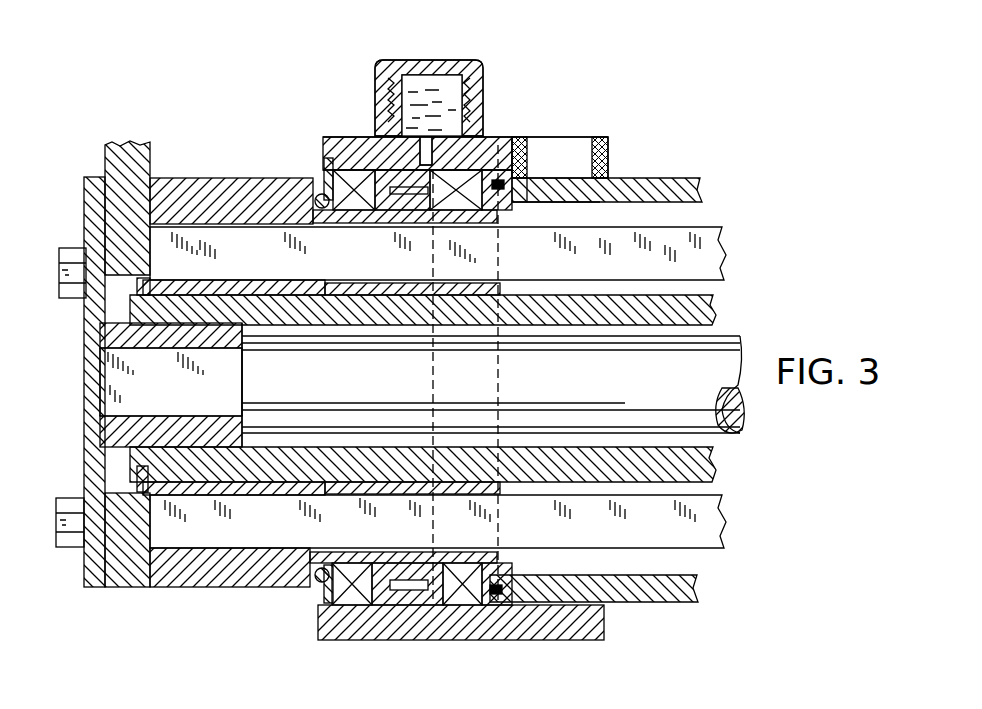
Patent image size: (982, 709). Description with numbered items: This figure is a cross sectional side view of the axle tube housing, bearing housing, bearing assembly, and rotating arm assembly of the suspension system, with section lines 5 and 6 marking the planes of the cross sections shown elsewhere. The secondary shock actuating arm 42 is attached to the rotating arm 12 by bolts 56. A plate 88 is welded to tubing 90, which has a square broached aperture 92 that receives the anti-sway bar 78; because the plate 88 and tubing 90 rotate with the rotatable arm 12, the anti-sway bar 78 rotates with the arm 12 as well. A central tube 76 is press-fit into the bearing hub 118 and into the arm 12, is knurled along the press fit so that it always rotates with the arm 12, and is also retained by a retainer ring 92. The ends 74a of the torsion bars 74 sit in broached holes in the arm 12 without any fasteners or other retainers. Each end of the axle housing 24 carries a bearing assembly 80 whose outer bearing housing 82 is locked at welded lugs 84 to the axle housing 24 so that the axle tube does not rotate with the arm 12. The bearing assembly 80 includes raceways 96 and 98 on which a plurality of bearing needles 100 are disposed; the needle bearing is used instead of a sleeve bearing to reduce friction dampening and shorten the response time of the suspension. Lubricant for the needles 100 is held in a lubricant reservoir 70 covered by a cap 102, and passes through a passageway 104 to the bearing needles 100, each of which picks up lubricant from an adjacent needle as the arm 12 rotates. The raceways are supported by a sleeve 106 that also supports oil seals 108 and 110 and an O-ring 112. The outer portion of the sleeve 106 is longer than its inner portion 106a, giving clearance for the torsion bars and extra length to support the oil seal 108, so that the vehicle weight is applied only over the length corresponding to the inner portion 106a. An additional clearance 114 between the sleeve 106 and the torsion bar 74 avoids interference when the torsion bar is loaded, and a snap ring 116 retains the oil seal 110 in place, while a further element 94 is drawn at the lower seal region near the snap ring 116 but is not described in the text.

The rotating arm 12 is at (205, 578).
The axle housing 24 is at (685, 594).
The secondary shock actuating arm 42 is at (150, 153).
The bolts 56 is at (70, 252).
The lubricant reservoir 70 is at (435, 85).
The torsion bar 74 is at (712, 235).
The ends of torsion bars 74a is at (432, 379).
The central tube 76 is at (713, 308).
The anti-sway bar 78 is at (493, 385).
The bearing assembly 80 is at (497, 104).
The bearing housing 82 is at (328, 140).
The welded lugs 84 is at (560, 157).
The plate 88 is at (93, 590).
The tubing 90 is at (100, 334).
The broached aperture 92 is at (65, 471).
The screw 94 is at (318, 583).
The raceway 96 is at (378, 172).
The raceway 98 is at (608, 160).
The bearing needles 100 is at (430, 190).
The cap 102 is at (383, 60).
The passageway 104 is at (434, 140).
The sleeve 106 is at (497, 217).
The inner portion of sleeve 106a is at (392, 280).
The oil seal 108 is at (500, 208).
The oil seal 110 is at (326, 162).
The O-ring 112 is at (320, 193).
The clearance 114 is at (499, 226).
The snap ring 116 is at (322, 604).
The bearing hub 118 is at (232, 287).
The section line 5 is at (405, 122).
The section line 6 is at (620, 170).